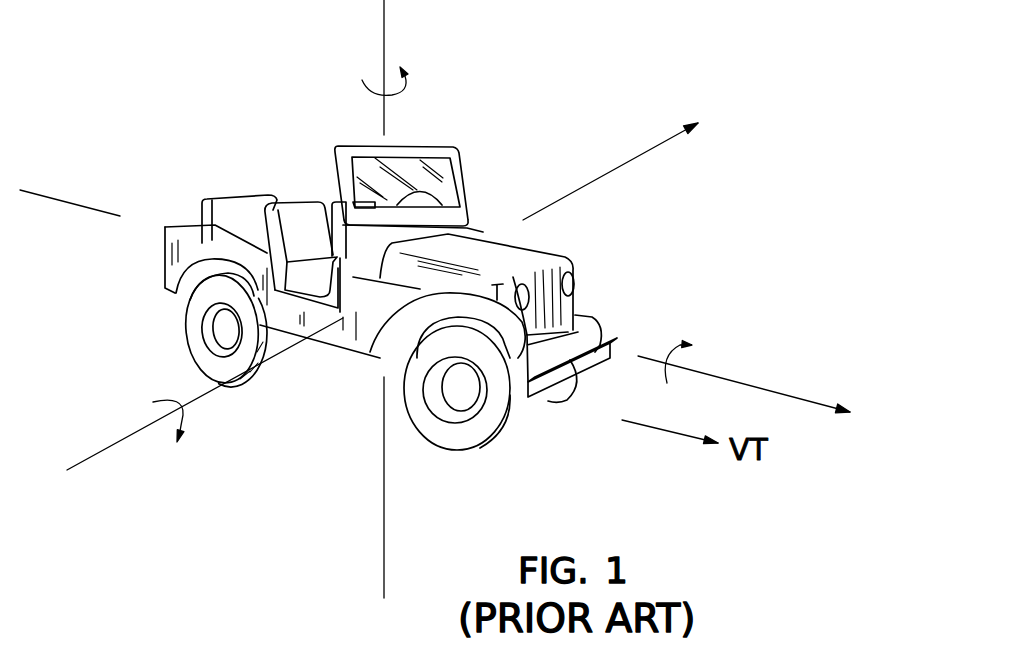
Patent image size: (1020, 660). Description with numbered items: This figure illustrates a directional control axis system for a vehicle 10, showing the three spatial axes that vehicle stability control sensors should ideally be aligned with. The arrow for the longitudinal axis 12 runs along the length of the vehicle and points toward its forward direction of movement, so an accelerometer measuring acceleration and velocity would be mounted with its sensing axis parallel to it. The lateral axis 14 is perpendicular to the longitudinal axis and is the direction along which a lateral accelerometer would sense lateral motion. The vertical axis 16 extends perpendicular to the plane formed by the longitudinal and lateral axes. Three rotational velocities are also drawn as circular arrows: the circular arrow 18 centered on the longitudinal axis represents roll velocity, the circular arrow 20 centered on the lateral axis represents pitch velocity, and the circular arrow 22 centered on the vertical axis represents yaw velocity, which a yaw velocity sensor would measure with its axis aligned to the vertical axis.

The vehicle 10 is at (197, 117).
The vehicle longitudinal axis 12 is at (715, 377).
The vehicle lateral axis 14 is at (596, 182).
The vertical axis 16 is at (385, 53).
The circular arrow for roll velocity 18 is at (667, 344).
The circular arrow for pitch velocity 20 is at (186, 418).
The circular arrow for yaw velocity 22 is at (410, 90).